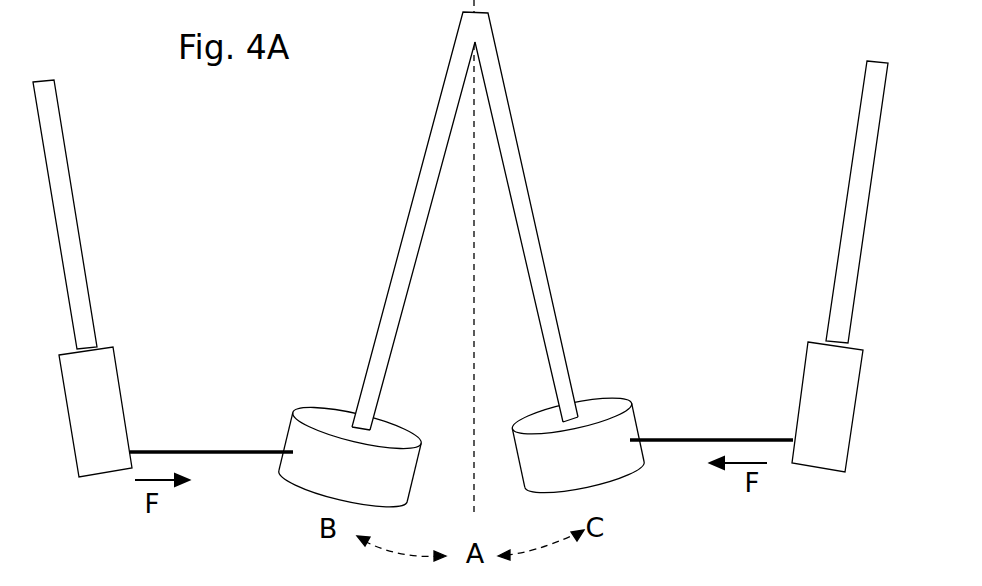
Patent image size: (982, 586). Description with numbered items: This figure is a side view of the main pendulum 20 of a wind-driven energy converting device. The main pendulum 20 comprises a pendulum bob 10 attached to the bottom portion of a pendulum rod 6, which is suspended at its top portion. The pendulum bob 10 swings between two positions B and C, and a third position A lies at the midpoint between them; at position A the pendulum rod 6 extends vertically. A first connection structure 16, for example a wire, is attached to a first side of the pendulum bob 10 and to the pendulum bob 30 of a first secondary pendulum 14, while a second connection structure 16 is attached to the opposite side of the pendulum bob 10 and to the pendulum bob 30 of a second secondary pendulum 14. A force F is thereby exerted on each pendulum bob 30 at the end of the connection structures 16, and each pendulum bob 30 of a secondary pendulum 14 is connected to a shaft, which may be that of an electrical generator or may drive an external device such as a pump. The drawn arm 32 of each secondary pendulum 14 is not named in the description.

The pendulum rod 6 is at (413, 192).
The pendulum bob 10 is at (287, 435).
The secondary pendulum 14 is at (133, 165).
The connection structure 16 is at (150, 450).
The main pendulum 20 is at (310, 205).
The pendulum bob 30 is at (105, 477).
The actuator arm 32 is at (88, 293).